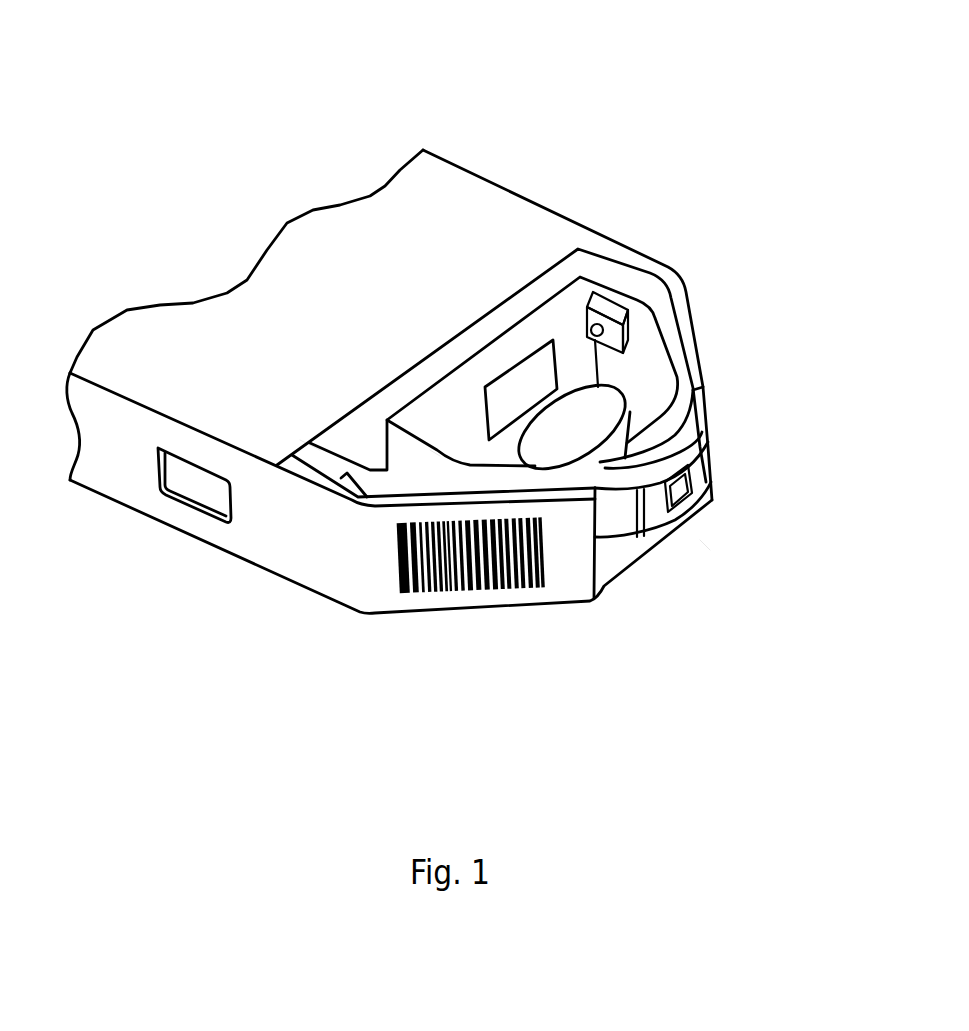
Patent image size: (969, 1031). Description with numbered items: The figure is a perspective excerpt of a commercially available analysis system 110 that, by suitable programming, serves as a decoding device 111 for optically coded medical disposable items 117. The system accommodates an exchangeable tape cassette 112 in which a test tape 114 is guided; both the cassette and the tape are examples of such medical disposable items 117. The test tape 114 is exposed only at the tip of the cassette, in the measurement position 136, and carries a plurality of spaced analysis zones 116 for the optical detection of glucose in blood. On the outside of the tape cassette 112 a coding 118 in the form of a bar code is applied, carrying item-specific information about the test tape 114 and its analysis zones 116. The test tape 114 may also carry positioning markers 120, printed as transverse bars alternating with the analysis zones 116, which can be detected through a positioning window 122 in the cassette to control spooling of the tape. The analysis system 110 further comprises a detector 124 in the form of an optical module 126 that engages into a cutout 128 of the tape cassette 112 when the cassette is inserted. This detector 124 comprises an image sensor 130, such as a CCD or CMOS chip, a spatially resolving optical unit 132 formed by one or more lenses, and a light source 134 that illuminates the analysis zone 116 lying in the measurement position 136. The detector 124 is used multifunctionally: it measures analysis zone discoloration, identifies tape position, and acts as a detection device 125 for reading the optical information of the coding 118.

The analysis system 110 is at (473, 319).
The decoding device 111 is at (473, 319).
The tape cassette 112 is at (389, 301).
The test tape 114 is at (420, 537).
The analysis zone 116 is at (693, 497).
The medical disposable item 117 is at (418, 365).
The coding 118 is at (447, 622).
The positioning marker 120 is at (613, 581).
The positioning window 122 is at (144, 525).
The detector 124 is at (276, 551).
The detection device 125 is at (276, 551).
The optical module 126 is at (276, 551).
The cutout 128 is at (266, 337).
The image sensor 130 is at (561, 298).
The spatially resolving optical unit 132 is at (658, 426).
The light source 134 is at (603, 300).
The measurement position 136 is at (774, 580).